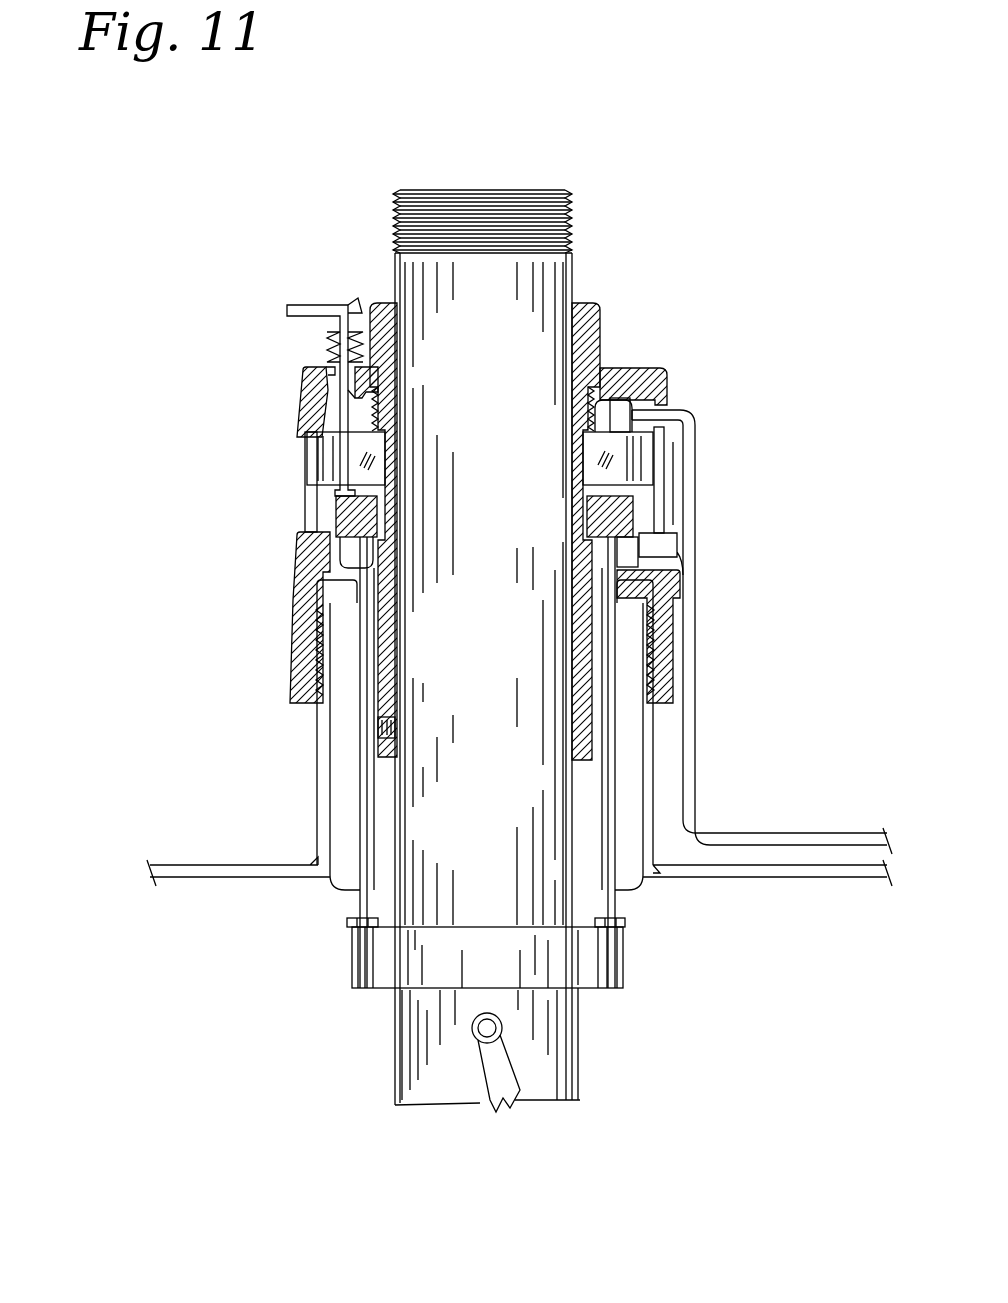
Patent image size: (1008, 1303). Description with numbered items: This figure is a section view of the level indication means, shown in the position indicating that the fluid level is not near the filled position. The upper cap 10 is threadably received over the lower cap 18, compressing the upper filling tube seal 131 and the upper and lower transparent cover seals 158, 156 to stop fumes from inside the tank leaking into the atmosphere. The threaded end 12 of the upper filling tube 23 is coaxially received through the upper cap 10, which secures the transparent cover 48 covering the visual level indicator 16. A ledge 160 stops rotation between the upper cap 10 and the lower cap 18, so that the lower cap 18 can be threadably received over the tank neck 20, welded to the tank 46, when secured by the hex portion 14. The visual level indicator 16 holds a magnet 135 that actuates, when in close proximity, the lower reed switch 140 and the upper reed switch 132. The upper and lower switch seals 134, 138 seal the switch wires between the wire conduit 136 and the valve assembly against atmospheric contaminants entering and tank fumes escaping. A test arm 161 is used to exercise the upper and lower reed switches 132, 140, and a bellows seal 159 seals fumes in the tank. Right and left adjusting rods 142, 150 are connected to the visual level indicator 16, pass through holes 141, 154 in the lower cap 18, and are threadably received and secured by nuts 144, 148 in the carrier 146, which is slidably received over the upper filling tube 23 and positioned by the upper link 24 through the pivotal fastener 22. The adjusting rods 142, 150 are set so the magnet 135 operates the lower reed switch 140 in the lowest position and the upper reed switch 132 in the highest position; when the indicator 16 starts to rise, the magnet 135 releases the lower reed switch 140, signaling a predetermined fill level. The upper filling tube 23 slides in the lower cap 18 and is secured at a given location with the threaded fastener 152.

The upper cap 10 is at (305, 380).
The threaded end 12 is at (495, 192).
The hex portion 14 is at (598, 312).
The visual level indicator 16 is at (322, 497).
The lower cap 18 is at (295, 600).
The tank neck 20 is at (318, 785).
The pivotal fastener 22 is at (478, 1040).
The upper filling tube 23 is at (580, 1045).
The upper link 24 is at (508, 1075).
The tank 46 is at (160, 865).
The transparent cover 48 is at (663, 467).
The upper filling tube seal 131 is at (597, 355).
The upper reed switch 132 is at (632, 368).
The upper switch seal 134 is at (672, 405).
The magnet 135 is at (632, 508).
The wire conduit 136 is at (693, 520).
The lower switch seal 138 is at (677, 545).
The lower reed switch 140 is at (620, 567).
The hole 141 is at (655, 590).
The right adjusting rod 142 is at (617, 818).
The nut 144 is at (627, 930).
The carrier 146 is at (352, 985).
The nut 148 is at (350, 925).
The left adjusting rod 150 is at (355, 845).
The threaded fastener 152 is at (380, 730).
The hole 154 is at (348, 578).
The lower transparent cover seal 156 is at (336, 518).
The upper transparent cover seal 158 is at (318, 432).
The bellows seal 159 is at (322, 345).
The ledge 160 is at (358, 298).
The test arm 161 is at (302, 305).